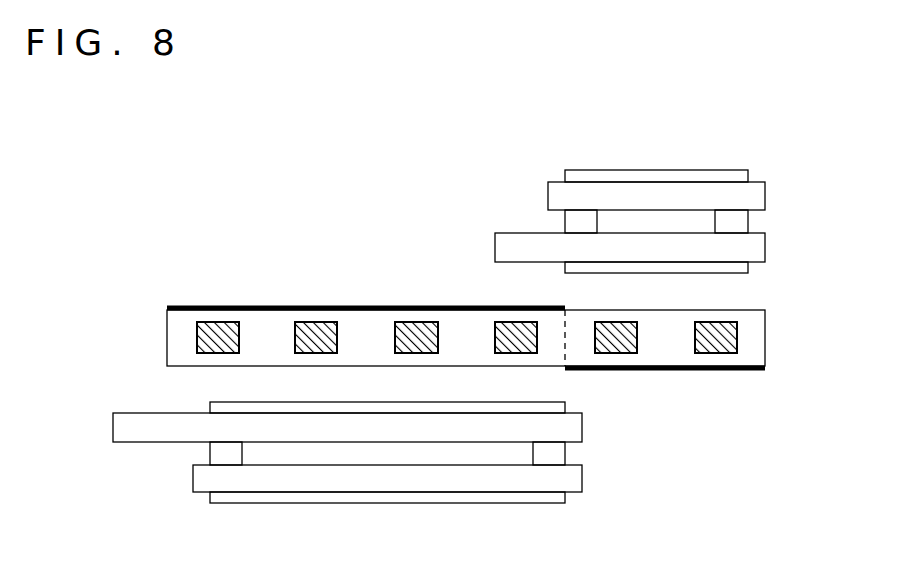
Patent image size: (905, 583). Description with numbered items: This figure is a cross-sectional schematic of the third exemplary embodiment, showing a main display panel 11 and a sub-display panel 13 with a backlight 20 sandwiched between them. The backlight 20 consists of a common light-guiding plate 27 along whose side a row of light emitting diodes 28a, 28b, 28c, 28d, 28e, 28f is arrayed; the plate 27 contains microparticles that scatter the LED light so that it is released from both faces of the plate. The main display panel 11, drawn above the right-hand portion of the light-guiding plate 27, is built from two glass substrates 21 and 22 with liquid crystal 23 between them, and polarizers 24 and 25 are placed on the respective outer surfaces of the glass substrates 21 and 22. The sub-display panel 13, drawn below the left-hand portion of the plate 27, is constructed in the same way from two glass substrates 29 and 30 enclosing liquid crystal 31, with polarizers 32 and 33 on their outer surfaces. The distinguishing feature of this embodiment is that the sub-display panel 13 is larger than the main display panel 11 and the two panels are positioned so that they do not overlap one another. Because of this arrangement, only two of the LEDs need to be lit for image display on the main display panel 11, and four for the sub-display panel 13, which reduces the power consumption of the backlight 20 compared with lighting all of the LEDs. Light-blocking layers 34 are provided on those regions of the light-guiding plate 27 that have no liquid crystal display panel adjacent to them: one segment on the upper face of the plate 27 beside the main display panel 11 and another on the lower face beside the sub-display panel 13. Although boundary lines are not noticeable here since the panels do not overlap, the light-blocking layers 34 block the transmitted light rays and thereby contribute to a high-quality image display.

The main display panel 11 is at (668, 208).
The sub-display panel 13 is at (498, 465).
The backlight 20 is at (524, 335).
The glass substrate 21 is at (552, 202).
The glass substrate 22 is at (505, 248).
The liquid crystal 23 is at (650, 223).
The polarizer 24 is at (585, 176).
The polarizer 25 is at (691, 250).
The light-guiding plate 27 is at (750, 337).
The LED 28a is at (228, 322).
The LED 28b is at (311, 322).
The LED 28c is at (423, 322).
The LED 28d is at (507, 322).
The LED 28e is at (618, 322).
The LED 28f is at (706, 322).
The glass substrate 29 is at (580, 426).
The glass substrate 30 is at (200, 482).
The liquid crystal 31 is at (377, 453).
The polarizer 32 is at (213, 406).
The polarizer 33 is at (215, 500).
The light-blocking layer 34 is at (190, 305).